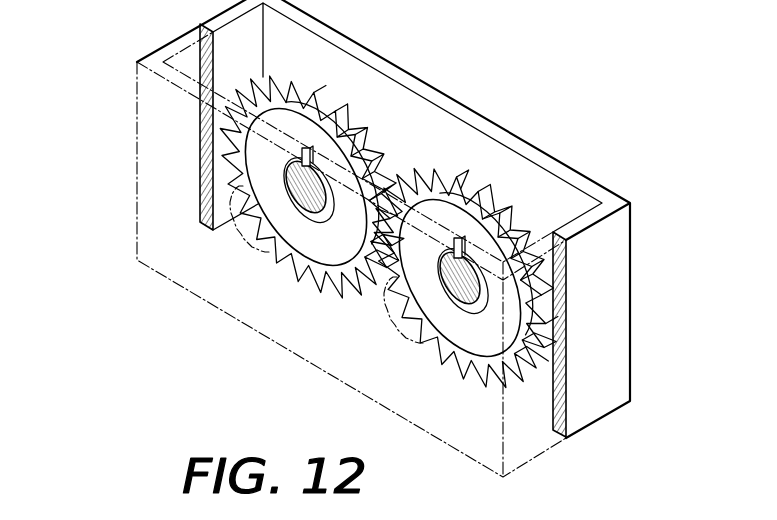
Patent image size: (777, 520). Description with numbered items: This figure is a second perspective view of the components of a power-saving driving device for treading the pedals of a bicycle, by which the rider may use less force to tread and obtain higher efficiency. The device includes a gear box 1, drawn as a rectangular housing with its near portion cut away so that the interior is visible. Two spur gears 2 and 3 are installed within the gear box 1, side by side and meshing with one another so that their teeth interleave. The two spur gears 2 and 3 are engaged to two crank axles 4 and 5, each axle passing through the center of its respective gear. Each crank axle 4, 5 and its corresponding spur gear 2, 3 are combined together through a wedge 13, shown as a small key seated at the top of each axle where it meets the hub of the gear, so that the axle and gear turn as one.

The gear housing 1 is at (608, 197).
The spur gear 2 is at (332, 108).
The spur gear 3 is at (502, 197).
The crank axle 4 is at (300, 186).
The crank axle 5 is at (470, 296).
The wedge 13 is at (303, 155).